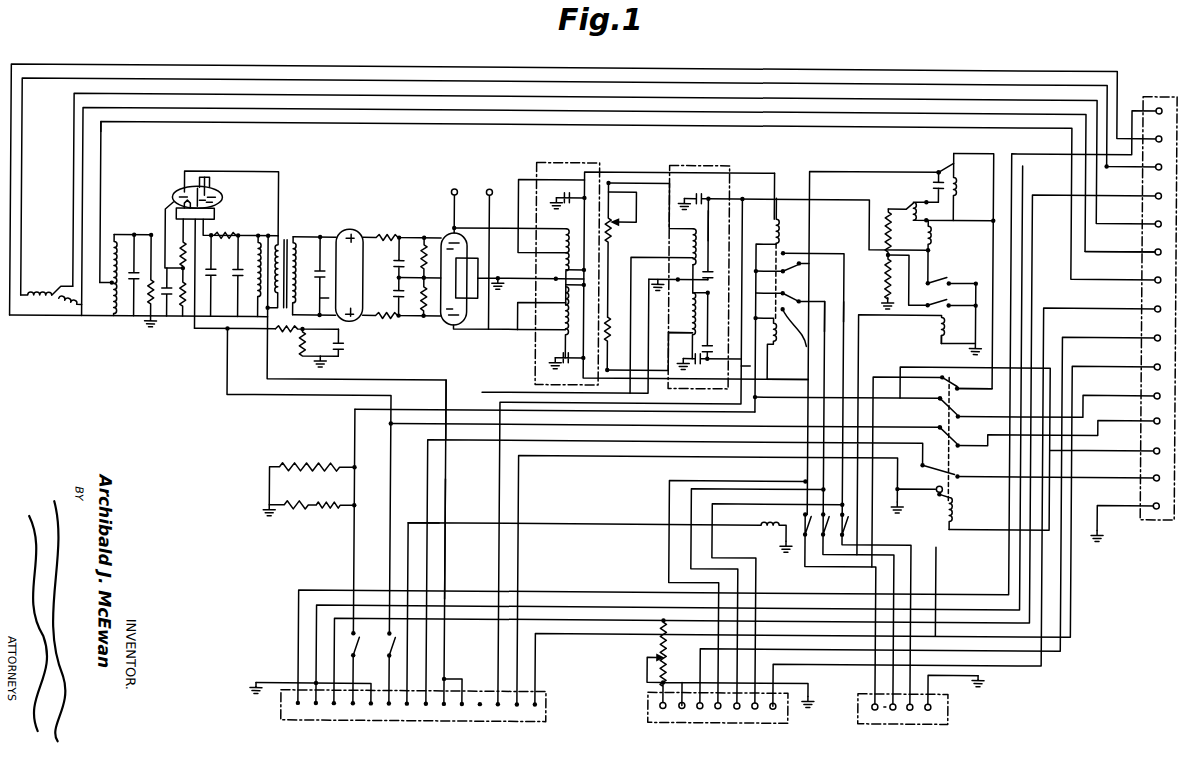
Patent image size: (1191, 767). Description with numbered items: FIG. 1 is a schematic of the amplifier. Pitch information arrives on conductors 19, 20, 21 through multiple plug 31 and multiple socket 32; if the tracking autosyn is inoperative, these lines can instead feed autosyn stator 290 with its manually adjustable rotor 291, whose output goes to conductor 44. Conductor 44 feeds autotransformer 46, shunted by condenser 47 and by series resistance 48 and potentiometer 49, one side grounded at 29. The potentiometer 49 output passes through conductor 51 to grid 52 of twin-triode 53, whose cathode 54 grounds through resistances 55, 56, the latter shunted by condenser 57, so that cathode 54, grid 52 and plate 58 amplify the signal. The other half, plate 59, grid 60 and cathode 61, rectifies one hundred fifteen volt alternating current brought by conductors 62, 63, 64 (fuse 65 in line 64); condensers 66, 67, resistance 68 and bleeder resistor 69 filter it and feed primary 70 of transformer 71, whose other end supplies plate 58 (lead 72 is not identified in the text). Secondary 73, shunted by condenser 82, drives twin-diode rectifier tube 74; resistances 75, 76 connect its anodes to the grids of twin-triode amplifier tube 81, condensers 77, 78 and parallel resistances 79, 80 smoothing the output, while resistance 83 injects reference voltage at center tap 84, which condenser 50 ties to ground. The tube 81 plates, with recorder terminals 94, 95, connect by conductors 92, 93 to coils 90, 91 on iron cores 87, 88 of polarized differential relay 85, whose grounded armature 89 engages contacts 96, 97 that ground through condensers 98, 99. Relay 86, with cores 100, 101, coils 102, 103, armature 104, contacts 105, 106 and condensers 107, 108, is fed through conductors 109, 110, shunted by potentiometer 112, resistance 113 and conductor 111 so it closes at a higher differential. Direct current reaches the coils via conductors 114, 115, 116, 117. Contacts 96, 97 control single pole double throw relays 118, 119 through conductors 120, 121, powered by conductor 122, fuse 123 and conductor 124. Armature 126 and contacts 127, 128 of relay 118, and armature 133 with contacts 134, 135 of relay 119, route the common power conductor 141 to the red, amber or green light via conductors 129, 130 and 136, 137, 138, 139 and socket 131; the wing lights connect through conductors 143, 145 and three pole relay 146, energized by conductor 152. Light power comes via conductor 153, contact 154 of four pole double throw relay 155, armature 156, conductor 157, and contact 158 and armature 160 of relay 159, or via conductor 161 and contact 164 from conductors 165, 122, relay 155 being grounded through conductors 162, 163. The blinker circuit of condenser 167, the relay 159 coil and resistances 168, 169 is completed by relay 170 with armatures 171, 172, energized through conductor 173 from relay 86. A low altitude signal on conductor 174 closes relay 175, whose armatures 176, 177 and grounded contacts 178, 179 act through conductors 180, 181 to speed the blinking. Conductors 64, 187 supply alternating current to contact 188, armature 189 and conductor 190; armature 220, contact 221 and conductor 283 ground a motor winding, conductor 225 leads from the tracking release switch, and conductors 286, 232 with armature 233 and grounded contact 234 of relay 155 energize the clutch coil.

The conductor 19 is at (298, 641).
The conductor 20 is at (685, 431).
The conductor 21 is at (736, 449).
The ground 29 is at (639, 483).
The multiple plug 31 is at (282, 714).
The multiple socket 32 is at (1164, 92).
The conductor 44 is at (728, 298).
The autotransformer 46 is at (122, 312).
The condenser 47 is at (124, 274).
The resistance 48 is at (158, 274).
The potentiometer 49 is at (150, 242).
The condenser 50 is at (344, 350).
The conductor 51 is at (162, 204).
The grid 52 is at (172, 189).
The twin-triode 53 is at (223, 207).
The cathode 54 is at (195, 213).
The resistance 55 is at (177, 244).
The resistance 56 is at (184, 300).
The condenser 57 is at (171, 282).
The plate 58 is at (178, 190).
The plate 59 is at (220, 177).
The grid 60 is at (227, 186).
The cathode 61 is at (228, 195).
The conductor 62 is at (220, 356).
The conductor 63 is at (226, 390).
The conductor 64 is at (392, 466).
The fuse 65 is at (382, 650).
The condenser 66 is at (219, 275).
The condenser 67 is at (231, 275).
The resistance 68 is at (233, 235).
The bleeder resistor 69 is at (251, 275).
The primary 70 is at (271, 263).
The transformer 71 is at (291, 230).
The plate lead 72 is at (267, 170).
The secondary 73 is at (305, 276).
The twin-diode rectifier tube 74 is at (350, 261).
The resistance 75 is at (402, 228).
The resistance 76 is at (401, 323).
The condenser 77 is at (386, 256).
The condenser 78 is at (386, 296).
The resistance 79 is at (416, 256).
The resistance 80 is at (416, 296).
The twin-triode amplifier tube 81 is at (452, 270).
The condenser 82 is at (326, 290).
The resistance 83 is at (306, 337).
The center tap 84 is at (313, 276).
The polarized differential relay 85 is at (567, 263).
The polarized differential relay 86 is at (699, 265).
The iron core 87 is at (531, 268).
The iron core 88 is at (553, 340).
The armature 89 is at (552, 295).
The coil 90 is at (554, 241).
The coil 91 is at (554, 314).
The conductor 92 is at (509, 213).
The conductor 93 is at (485, 338).
The terminal 94 is at (444, 202).
The terminal 95 is at (483, 250).
The contact 96 is at (585, 260).
The contact 97 is at (585, 289).
The condenser 98 is at (563, 195).
The condenser 99 is at (560, 359).
The iron core 100 is at (686, 238).
The iron core 101 is at (676, 324).
The coil 102 is at (661, 318).
The coil 103 is at (673, 320).
The armature 104 is at (720, 239).
The contact 105 is at (709, 238).
The contact 106 is at (715, 324).
The condenser 107 is at (693, 194).
The condenser 108 is at (709, 354).
The conductor 109 is at (644, 182).
The conductor 110 is at (510, 345).
The conductor 111 is at (611, 243).
The potentiometer 112 is at (626, 215).
The resistance 113 is at (597, 340).
The conductor 114 is at (466, 488).
The conductor 115 is at (468, 680).
The conductor 116 is at (458, 539).
The conductor 117 is at (581, 342).
The single pole double throw relay 118 is at (762, 305).
The single pole double throw relay 119 is at (778, 348).
The conductor 120 is at (759, 181).
The conductor 121 is at (620, 451).
The conductor 122 is at (346, 414).
The fuse 123 is at (365, 556).
The conductor 124 is at (740, 365).
The armature 126 is at (776, 263).
The contact 127 is at (811, 370).
The contact 128 is at (811, 261).
The conductor 129 is at (840, 256).
The conductor 130 is at (758, 588).
The socket 131 is at (666, 730).
The armature 133 is at (813, 406).
The contact 134 is at (780, 286).
The contact 135 is at (796, 326).
The conductor 136 is at (826, 298).
The conductor 137 is at (736, 584).
The conductor 138 is at (797, 378).
The conductor 139 is at (718, 590).
The common power supply conductor 141 is at (873, 333).
The conductor 143 is at (912, 712).
The conductor 145 is at (894, 617).
The three pole single throw relay 146 is at (766, 528).
The conductor 152 is at (404, 524).
The conductor 153 is at (522, 498).
The contact 154 is at (967, 377).
The four pole double throw relay 155 is at (960, 510).
The armature 156 is at (908, 471).
The conductor 157 is at (974, 264).
The contact 158 is at (948, 164).
The relay 159 is at (966, 186).
The armature 160 is at (924, 166).
The conductor 161 is at (846, 536).
The conductor 162 is at (929, 515).
The conductor 163 is at (881, 529).
The contact 164 is at (925, 403).
The conductor 165 is at (848, 392).
The condenser 167 is at (930, 183).
The resistance 168 is at (884, 206).
The resistance 169 is at (872, 277).
The double pole single throw relay 170 is at (935, 232).
The armature 171 is at (896, 198).
The armature 172 is at (953, 211).
The conductor 173 is at (817, 216).
The conductor 174 is at (422, 452).
The double pole single throw relay 175 is at (923, 341).
The armature 176 is at (943, 272).
The armature 177 is at (930, 298).
The grounded contact 178 is at (966, 277).
The grounded contact 179 is at (965, 312).
The conductor 180 is at (948, 248).
The conductor 181 is at (882, 305).
The conductor 187 is at (673, 424).
The contact 188 is at (920, 433).
The armature 189 is at (961, 408).
The conductor 190 is at (1057, 397).
The armature 220 is at (969, 466).
The contact 221 is at (916, 490).
The conductor 225 is at (776, 680).
The conductor 232 is at (1057, 425).
The armature 233 is at (968, 435).
The contact 234 is at (930, 458).
The conductor 283 is at (1056, 486).
The conductor 286 is at (1028, 440).
The autosyn stator 290 is at (48, 283).
The rotor 291 is at (84, 307).